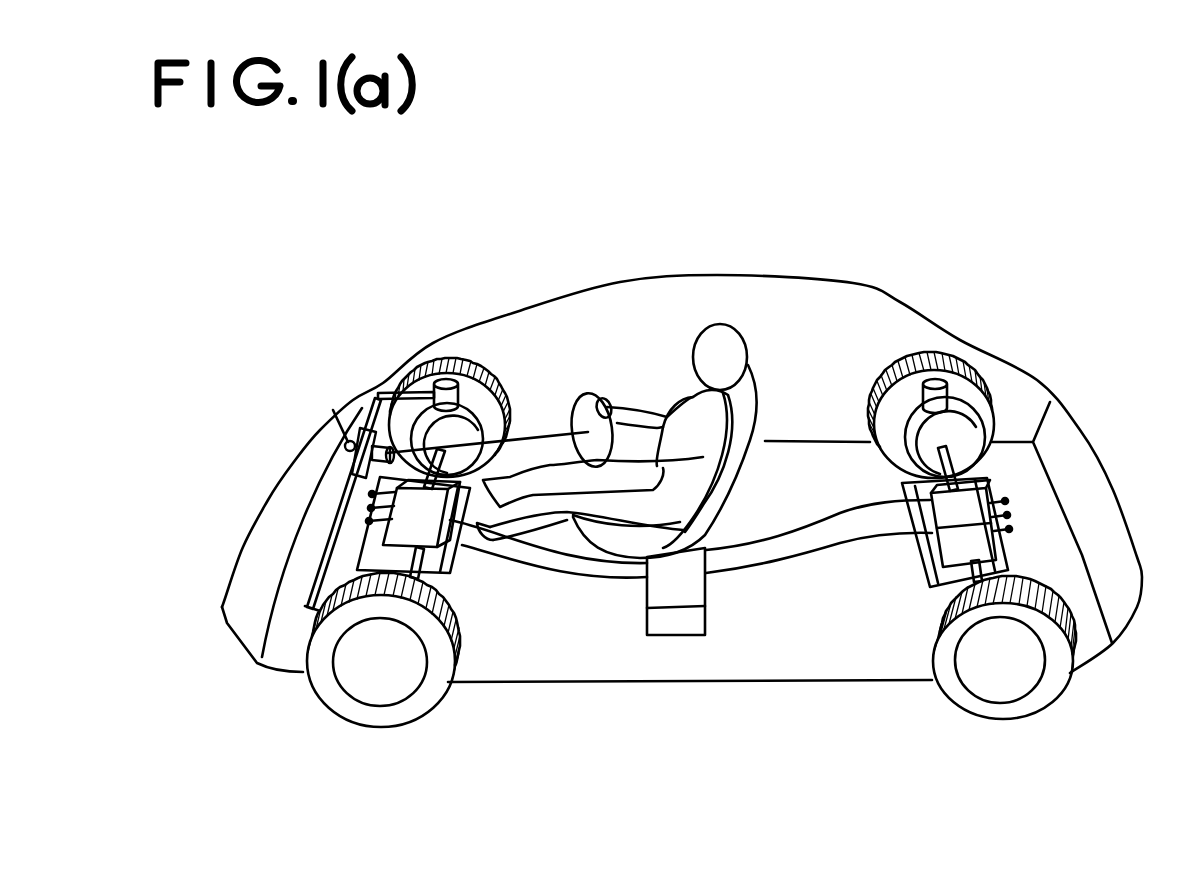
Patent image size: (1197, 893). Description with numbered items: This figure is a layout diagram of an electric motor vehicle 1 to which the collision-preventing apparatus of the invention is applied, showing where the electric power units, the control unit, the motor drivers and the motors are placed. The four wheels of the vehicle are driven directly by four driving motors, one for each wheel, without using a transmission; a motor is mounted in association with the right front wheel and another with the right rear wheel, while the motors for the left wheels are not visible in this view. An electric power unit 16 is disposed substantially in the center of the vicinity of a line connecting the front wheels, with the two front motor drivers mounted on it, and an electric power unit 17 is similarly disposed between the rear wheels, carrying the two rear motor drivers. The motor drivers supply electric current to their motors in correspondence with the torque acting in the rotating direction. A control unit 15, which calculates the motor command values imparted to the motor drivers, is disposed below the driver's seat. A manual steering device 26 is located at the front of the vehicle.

The electric motor vehicle 1 is at (748, 262).
The manual steering device 26 is at (365, 442).
The control unit 15 is at (668, 637).
The electric power unit 16 is at (448, 578).
The electric power unit 17 is at (917, 577).